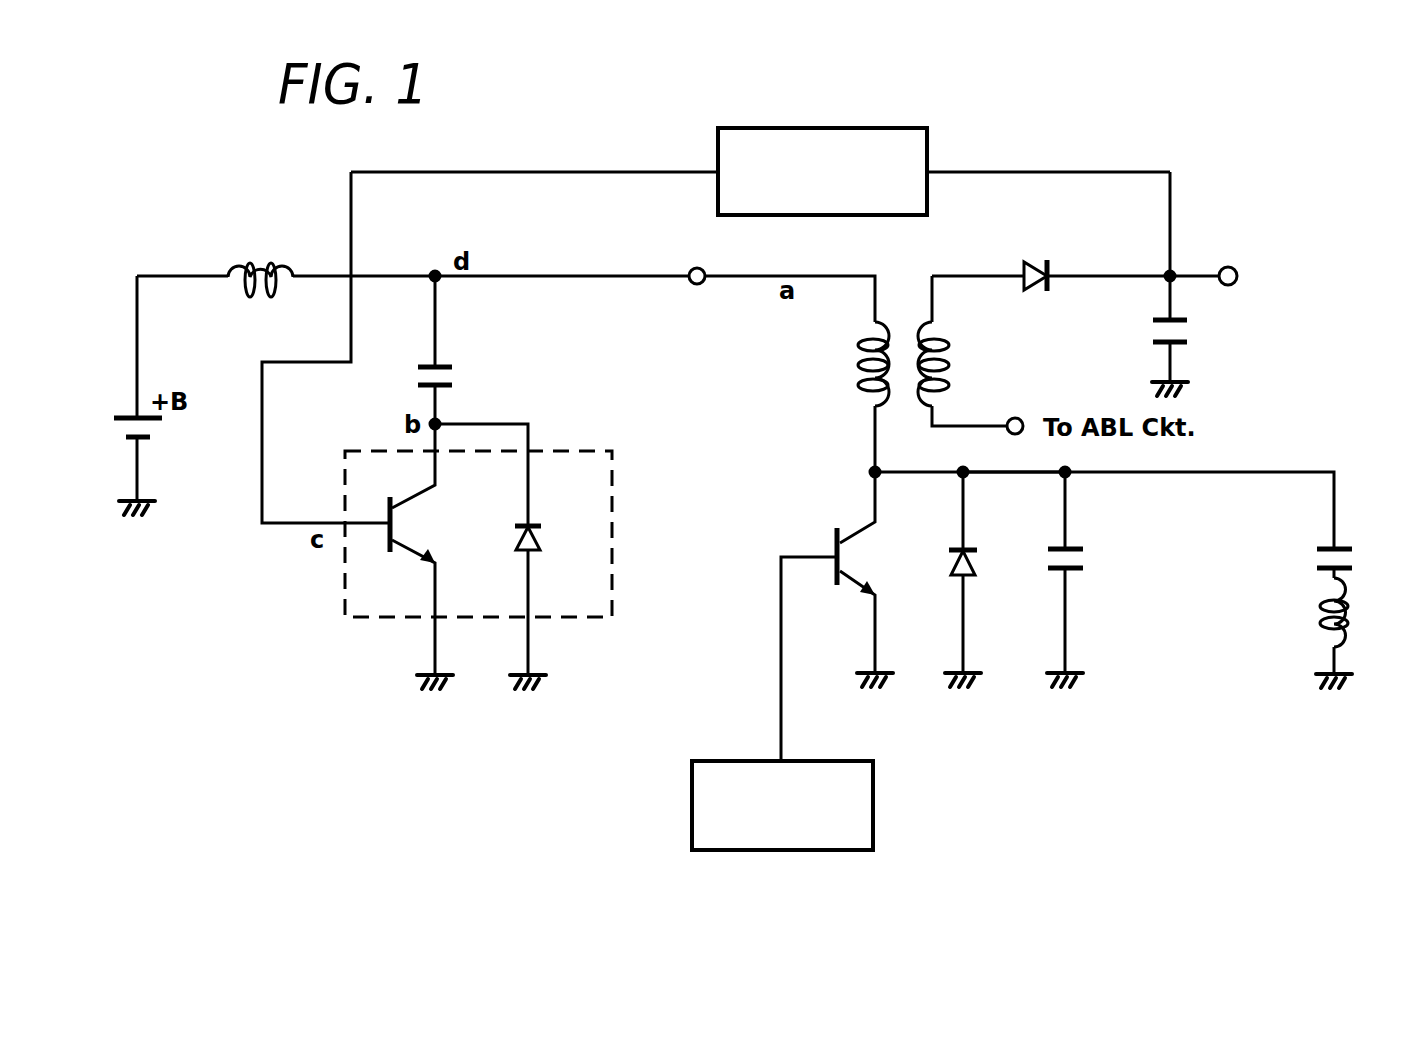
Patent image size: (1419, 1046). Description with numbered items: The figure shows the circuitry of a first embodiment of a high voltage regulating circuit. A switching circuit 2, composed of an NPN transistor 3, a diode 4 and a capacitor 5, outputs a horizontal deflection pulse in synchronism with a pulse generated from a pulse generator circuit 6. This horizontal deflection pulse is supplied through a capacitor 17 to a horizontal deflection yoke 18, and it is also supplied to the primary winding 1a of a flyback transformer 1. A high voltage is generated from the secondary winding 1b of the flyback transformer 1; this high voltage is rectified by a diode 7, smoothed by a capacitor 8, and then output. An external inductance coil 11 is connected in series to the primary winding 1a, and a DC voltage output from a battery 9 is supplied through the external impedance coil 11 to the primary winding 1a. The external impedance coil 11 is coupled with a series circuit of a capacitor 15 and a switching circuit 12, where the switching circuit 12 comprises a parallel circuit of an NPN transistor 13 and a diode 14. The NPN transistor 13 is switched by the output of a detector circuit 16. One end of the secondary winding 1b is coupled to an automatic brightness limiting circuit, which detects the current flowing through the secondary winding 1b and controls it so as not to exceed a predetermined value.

The flyback transformer 1 is at (900, 374).
The primary winding 1a is at (855, 352).
The secondary winding 1b is at (948, 364).
The switching circuit 2 is at (1094, 592).
The NPN transistor 3 is at (838, 592).
The diode 4 is at (949, 572).
The capacitor 5 is at (1052, 572).
The pulse generator circuit 6 is at (822, 762).
The diode 7 is at (1031, 256).
The capacitor 8 is at (1190, 330).
The battery 9 is at (120, 428).
The external inductance coil 11 is at (247, 262).
The switching circuit 12 is at (616, 462).
The NPN transistor 13 is at (385, 540).
The diode 14 is at (541, 536).
The capacitor 15 is at (456, 380).
The detector circuit 16 is at (872, 128).
The capacitor 17 is at (1352, 557).
The horizontal deflection yoke 18 is at (1357, 613).